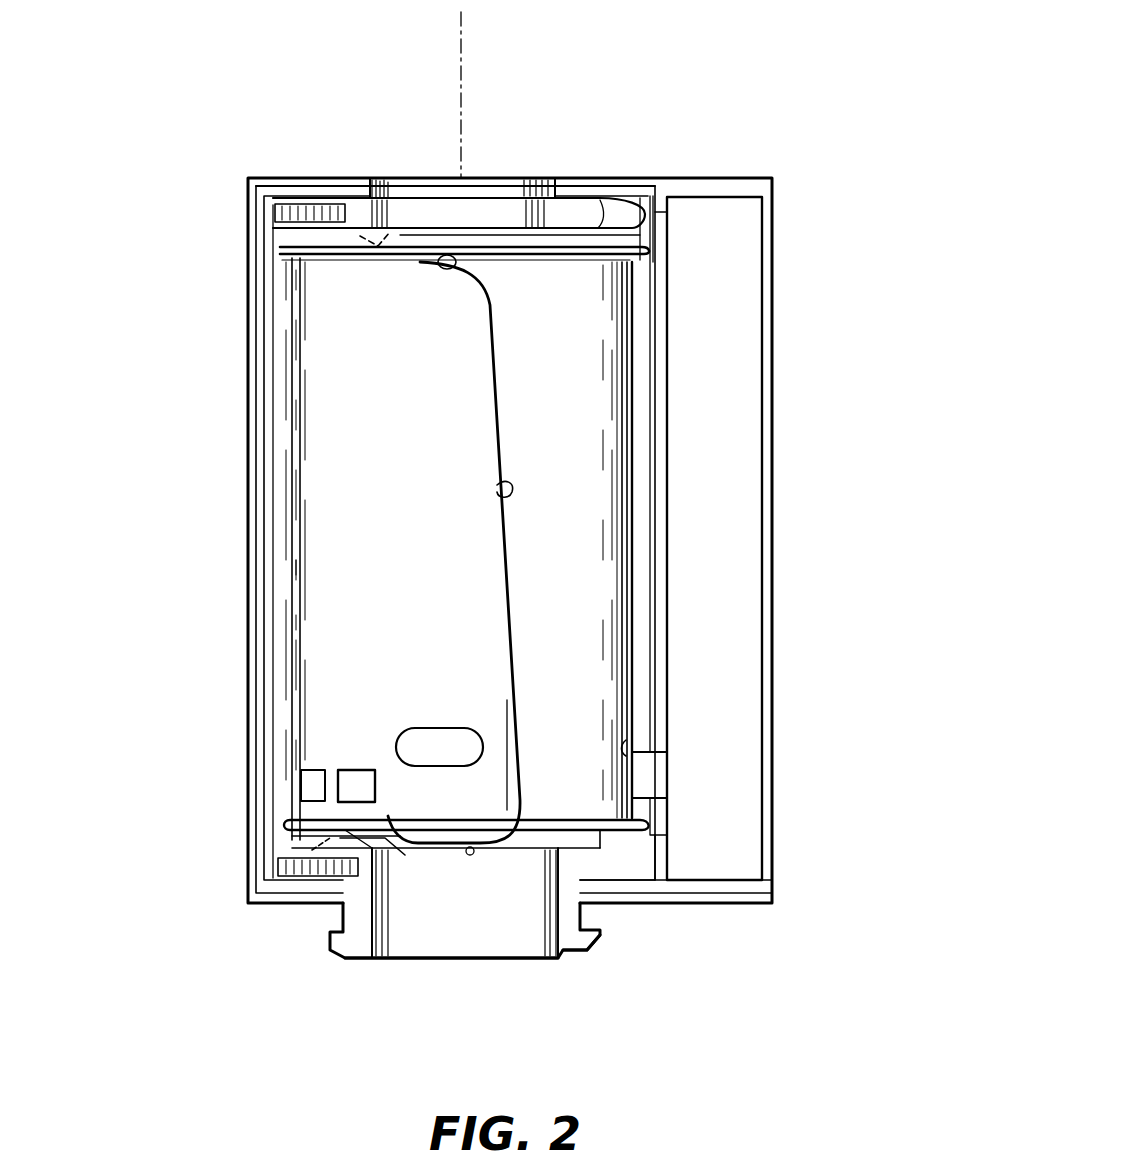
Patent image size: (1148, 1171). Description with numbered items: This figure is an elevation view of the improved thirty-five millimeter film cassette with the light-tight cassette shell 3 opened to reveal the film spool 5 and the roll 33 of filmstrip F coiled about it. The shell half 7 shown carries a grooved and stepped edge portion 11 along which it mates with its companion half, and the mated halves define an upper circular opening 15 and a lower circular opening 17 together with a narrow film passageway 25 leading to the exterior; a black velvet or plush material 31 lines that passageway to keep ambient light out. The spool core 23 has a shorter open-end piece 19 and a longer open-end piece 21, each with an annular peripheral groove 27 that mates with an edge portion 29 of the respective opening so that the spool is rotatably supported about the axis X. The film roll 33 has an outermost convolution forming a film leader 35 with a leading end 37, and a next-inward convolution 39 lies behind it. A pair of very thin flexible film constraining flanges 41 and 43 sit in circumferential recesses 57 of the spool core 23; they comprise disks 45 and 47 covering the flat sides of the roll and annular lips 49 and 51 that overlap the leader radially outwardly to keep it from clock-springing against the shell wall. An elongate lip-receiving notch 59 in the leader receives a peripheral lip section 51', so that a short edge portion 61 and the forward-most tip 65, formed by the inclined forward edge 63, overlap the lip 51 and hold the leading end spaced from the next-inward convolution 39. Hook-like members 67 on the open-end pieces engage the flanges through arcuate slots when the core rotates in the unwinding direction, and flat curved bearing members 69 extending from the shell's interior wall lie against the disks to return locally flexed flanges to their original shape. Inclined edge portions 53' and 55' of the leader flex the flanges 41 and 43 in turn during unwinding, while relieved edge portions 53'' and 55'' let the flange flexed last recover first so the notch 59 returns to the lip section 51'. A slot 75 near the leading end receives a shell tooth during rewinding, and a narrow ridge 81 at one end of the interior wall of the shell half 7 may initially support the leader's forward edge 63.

The cassette shell 3 is at (312, 166).
The film spool 5 is at (282, 622).
The shell half 7 is at (266, 178).
The grooved and stepped edge portion 11 is at (262, 308).
The upper circular opening 15 is at (544, 184).
The lower circular opening 17 is at (556, 940).
The shorter open-end piece 19 is at (387, 178).
The longer open-end piece 21 is at (392, 960).
The spool core 23 is at (398, 168).
The film passageway 25 is at (765, 398).
The annular peripheral groove 27 is at (432, 197).
The edge portion 29 is at (514, 184).
The black velvet or plush material 31 is at (720, 265).
The film roll 33 is at (282, 567).
The film leader 35 is at (300, 478).
The leading end 37 is at (497, 582).
The next-inward convolution 39 is at (580, 492).
The upper film constraining flange 41 is at (272, 238).
The lower film constraining flange 43 is at (280, 842).
The disk 45 is at (598, 226).
The disk 47 is at (600, 852).
The annular lip 49 is at (620, 200).
The annular lip 51 is at (660, 885).
The peripheral lip section 51' is at (397, 882).
The inclined edge portion 53' is at (369, 278).
The relieved edge portion 53'' is at (427, 301).
The inclined edge portion 55' is at (295, 906).
The relieved edge portion 55'' is at (349, 919).
The circumferential recess 57 is at (282, 400).
The lip-receiving notch 59 is at (391, 812).
The edge portion 61 is at (473, 847).
The forward edge 63 is at (496, 490).
The forward-most tip 65 is at (519, 736).
The hook-like member 67 is at (626, 756).
The curved bearing member 69 is at (285, 208).
The slot 75 is at (446, 732).
The narrow ridge 81 is at (655, 617).
The filmstrip F is at (332, 665).
The axis X is at (461, 47).